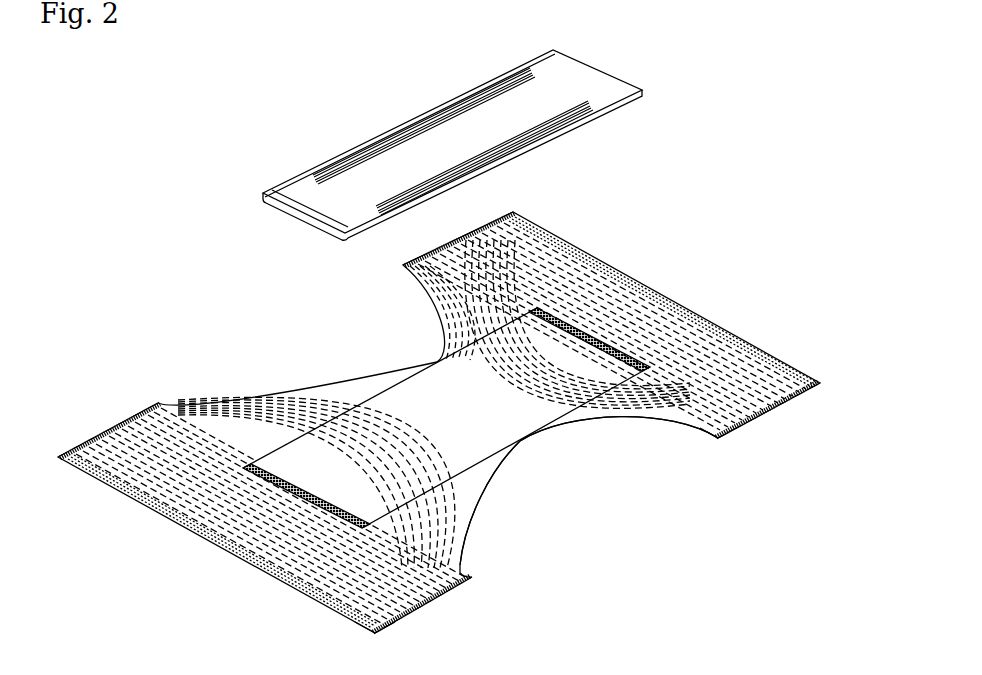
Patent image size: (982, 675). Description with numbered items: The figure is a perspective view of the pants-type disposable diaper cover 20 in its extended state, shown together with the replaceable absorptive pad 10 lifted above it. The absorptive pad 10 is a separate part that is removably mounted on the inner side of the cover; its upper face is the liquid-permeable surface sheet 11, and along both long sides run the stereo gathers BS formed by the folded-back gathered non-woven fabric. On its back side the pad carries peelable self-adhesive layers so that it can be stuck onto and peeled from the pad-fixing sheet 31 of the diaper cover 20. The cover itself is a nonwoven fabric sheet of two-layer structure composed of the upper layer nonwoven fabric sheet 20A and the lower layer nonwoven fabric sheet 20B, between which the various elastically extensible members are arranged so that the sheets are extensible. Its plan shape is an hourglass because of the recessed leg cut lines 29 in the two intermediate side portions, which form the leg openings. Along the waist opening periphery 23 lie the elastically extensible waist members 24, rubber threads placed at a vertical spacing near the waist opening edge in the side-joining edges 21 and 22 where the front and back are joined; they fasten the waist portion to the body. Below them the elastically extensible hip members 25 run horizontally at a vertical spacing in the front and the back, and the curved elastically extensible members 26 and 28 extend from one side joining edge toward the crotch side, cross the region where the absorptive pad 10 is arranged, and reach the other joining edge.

The absorptive pad 10 is at (452, 132).
The liquid-permeable surface sheet 11 is at (587, 82).
The stereo gathers BS is at (490, 92).
The pants-type disposable diaper cover 20 is at (782, 361).
The upper layer nonwoven fabric sheet 20A is at (446, 418).
The lower layer nonwoven fabric sheet 20B is at (428, 372).
The side-joining edge 21 is at (498, 207).
The side-joining edge 22 is at (153, 393).
The waist opening periphery 23 is at (599, 525).
The elastically extensible waist members 24 is at (548, 230).
The elastically extensible hip members 25 is at (677, 327).
The curved elastically extensible member 26 is at (460, 490).
The curved elastically extensible member 28 is at (447, 307).
The leg cut line 29 is at (638, 417).
The pad-fixing sheet 31 is at (528, 433).